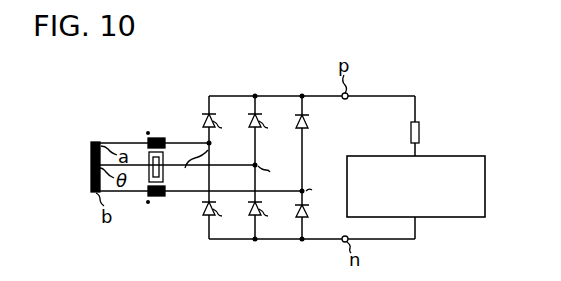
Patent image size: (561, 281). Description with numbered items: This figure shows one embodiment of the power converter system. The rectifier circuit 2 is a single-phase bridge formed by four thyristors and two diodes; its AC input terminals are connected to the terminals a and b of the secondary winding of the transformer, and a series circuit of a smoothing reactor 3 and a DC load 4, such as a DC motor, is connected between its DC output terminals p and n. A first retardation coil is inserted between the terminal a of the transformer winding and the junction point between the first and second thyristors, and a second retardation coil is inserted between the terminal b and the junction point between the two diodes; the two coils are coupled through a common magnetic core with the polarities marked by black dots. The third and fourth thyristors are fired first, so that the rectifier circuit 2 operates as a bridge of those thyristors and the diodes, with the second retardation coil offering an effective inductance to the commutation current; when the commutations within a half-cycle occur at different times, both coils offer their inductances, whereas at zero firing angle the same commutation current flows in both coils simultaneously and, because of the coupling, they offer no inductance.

The rectifier circuit 2 is at (253, 77).
The smoothing reactor 3 is at (420, 132).
The DC load 4 is at (485, 179).